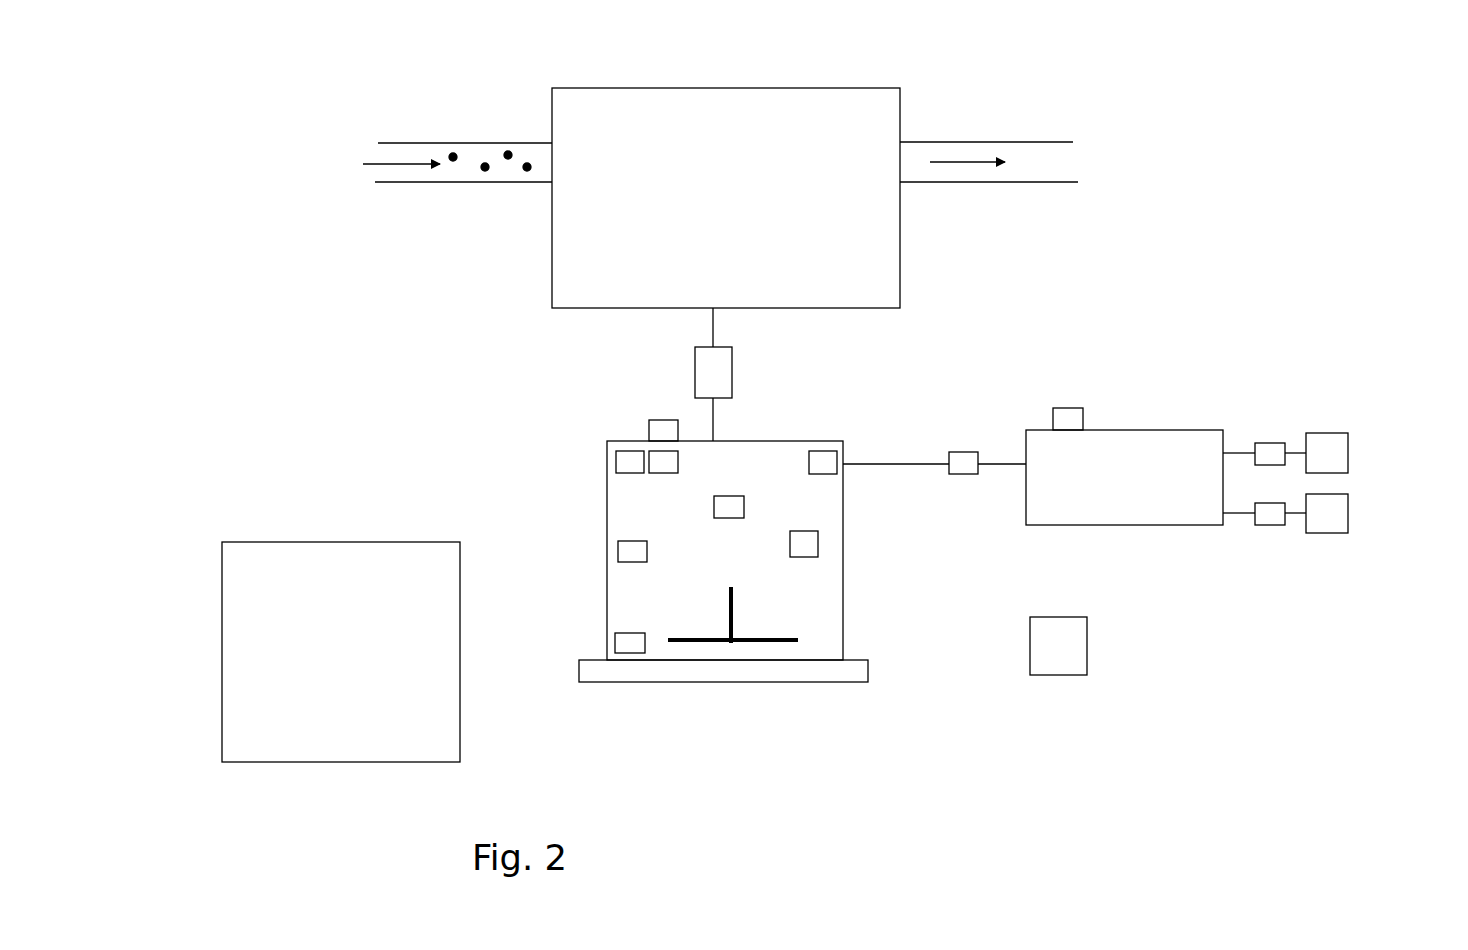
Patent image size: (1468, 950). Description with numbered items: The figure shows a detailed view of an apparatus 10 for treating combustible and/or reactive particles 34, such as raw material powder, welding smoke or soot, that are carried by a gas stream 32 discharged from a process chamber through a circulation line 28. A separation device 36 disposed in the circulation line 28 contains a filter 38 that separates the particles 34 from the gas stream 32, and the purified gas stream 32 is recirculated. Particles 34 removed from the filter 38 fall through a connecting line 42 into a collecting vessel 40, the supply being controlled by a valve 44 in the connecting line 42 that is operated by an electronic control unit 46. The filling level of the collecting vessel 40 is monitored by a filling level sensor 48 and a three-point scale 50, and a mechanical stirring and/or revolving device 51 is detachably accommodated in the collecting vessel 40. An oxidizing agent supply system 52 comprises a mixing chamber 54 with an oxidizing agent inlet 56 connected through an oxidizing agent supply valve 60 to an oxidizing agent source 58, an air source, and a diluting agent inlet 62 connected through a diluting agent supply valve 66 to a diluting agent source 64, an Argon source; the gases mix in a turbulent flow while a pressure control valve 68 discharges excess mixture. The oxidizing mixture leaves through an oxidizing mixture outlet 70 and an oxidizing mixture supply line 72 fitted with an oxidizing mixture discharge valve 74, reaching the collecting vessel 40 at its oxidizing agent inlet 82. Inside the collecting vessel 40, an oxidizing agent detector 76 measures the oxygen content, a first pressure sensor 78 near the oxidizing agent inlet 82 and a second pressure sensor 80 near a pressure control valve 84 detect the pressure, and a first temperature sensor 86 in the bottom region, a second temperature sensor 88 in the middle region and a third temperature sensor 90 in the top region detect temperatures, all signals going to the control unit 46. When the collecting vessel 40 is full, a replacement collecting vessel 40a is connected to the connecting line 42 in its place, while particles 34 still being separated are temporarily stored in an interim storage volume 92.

The apparatus 10 is at (283, 218).
The circulation line 28 is at (463, 182).
The gas stream 32 is at (393, 164).
The combustible and/or reactive particles 34 is at (453, 157).
The separation device 36 is at (925, 120).
The filter 38 is at (552, 295).
The interim storage volume 92 is at (726, 198).
The collecting vessel 40 is at (606, 563).
The replacement collecting vessel 40a is at (220, 632).
The connecting line 42 is at (713, 420).
The valve 44 is at (732, 355).
The electronic control unit 46 is at (1087, 643).
The filling level sensor 48 is at (807, 547).
The scale 50 is at (853, 667).
The mechanical stirring and/or revolving device 51 is at (730, 643).
The oxidizing agent supply system 52 is at (1180, 357).
The mixing chamber 54 is at (1063, 510).
The oxidizing agent inlet 56 is at (1228, 428).
The oxidizing agent source 58 is at (1348, 450).
The oxidizing agent supply valve 60 is at (1275, 452).
The diluting agent inlet 62 is at (1223, 528).
The diluting agent source 64 is at (1348, 512).
The diluting agent supply valve 66 is at (1270, 520).
The pressure control valve 68 is at (1068, 420).
The oxidizing mixture outlet 70 is at (1018, 463).
The oxidizing mixture supply line 72 is at (898, 462).
The oxidizing mixture discharge valve 74 is at (970, 460).
The oxidizing agent detector 76 is at (733, 495).
The first pressure sensor 78 is at (825, 460).
The second pressure sensor 80 is at (662, 463).
The oxidizing agent inlet 82 is at (850, 468).
The pressure control valve 84 is at (663, 428).
The first temperature sensor 86 is at (612, 641).
The second temperature sensor 88 is at (642, 553).
The third temperature sensor 90 is at (607, 460).